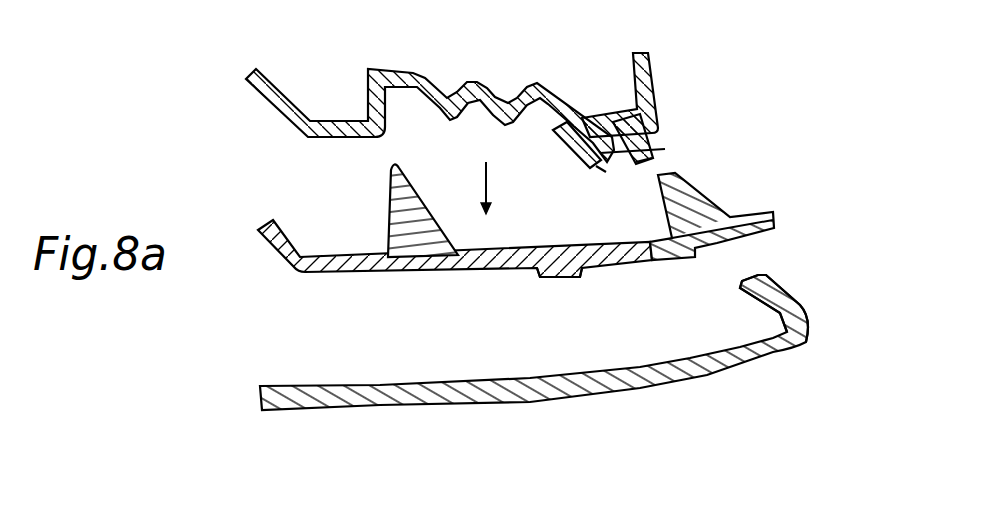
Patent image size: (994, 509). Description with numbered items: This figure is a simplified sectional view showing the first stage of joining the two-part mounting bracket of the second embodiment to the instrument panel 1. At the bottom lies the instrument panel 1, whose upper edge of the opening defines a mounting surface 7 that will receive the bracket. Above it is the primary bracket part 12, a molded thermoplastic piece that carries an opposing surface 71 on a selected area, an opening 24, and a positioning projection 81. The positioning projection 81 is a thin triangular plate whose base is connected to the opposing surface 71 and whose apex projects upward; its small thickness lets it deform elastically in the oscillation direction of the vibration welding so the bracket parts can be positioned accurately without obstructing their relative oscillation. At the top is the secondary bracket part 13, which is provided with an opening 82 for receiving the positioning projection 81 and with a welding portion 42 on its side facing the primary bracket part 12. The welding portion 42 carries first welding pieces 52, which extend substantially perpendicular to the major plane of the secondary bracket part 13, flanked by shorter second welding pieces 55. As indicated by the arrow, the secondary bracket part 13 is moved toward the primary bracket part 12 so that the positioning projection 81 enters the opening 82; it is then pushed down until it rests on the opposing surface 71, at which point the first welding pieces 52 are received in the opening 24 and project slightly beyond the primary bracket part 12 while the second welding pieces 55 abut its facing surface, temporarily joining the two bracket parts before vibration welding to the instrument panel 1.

The opening 82 is at (398, 68).
The secondary bracket part 13 is at (653, 76).
The second welding pieces 55 is at (667, 148).
The first welding pieces 52 is at (647, 163).
The welding portion 42 is at (573, 155).
The opposing surface 71 is at (459, 270).
The opening 24 is at (637, 262).
The positioning projection 81 is at (412, 188).
The primary bracket part 12 is at (780, 219).
The mounting surface 7 is at (554, 340).
The instrument panel 1 is at (810, 324).